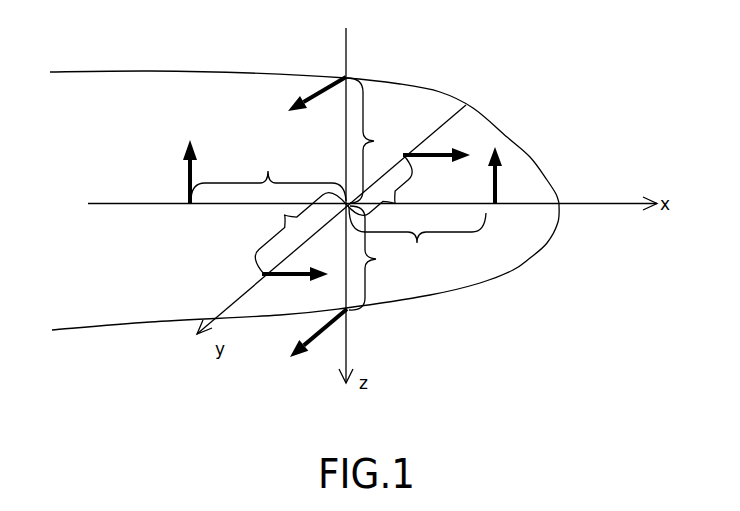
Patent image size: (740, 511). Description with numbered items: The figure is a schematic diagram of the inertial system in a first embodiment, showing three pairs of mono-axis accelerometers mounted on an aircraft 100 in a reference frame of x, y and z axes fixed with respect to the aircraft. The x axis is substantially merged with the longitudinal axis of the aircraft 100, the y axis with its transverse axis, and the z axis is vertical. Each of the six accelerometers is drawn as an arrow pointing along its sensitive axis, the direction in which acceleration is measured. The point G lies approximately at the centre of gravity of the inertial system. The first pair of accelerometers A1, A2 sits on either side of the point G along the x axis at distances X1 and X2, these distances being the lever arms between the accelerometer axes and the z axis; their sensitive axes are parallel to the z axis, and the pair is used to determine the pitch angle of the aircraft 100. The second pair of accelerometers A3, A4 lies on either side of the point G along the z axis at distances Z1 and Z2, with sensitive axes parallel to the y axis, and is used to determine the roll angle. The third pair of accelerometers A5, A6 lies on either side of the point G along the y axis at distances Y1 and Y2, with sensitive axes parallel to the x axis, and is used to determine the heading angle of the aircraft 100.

The aircraft 100 is at (437, 94).
The point G is at (374, 188).
The accelerometer A1 is at (508, 175).
The accelerometer A2 is at (170, 171).
The accelerometer A3 is at (316, 348).
The accelerometer A4 is at (317, 76).
The accelerometer A5 is at (295, 287).
The accelerometer A6 is at (436, 146).
The distance x1 X1 is at (417, 239).
The distance x2 X2 is at (268, 173).
The distance y1 Y1 is at (295, 233).
The distance y2 Y2 is at (390, 193).
The distance z1 Z1 is at (377, 258).
The distance z2 Z2 is at (378, 140).